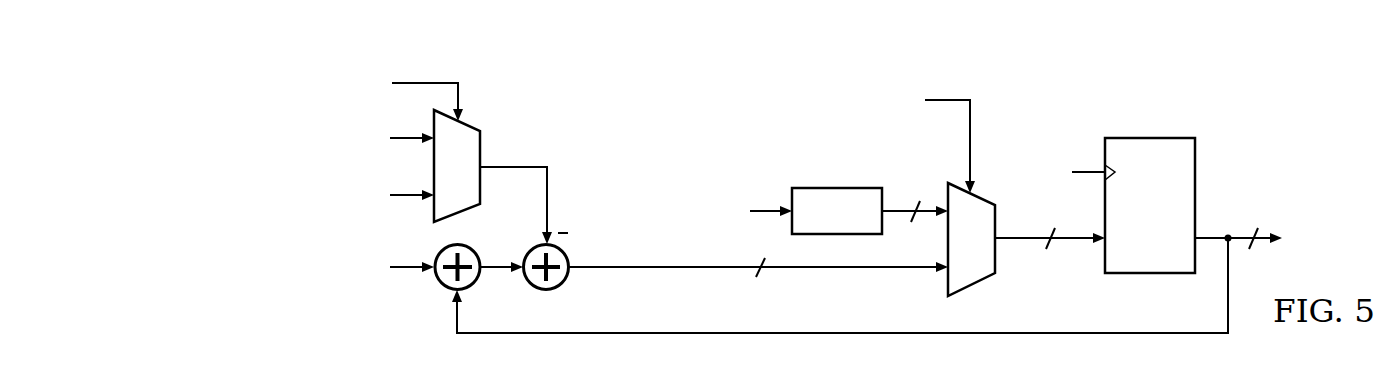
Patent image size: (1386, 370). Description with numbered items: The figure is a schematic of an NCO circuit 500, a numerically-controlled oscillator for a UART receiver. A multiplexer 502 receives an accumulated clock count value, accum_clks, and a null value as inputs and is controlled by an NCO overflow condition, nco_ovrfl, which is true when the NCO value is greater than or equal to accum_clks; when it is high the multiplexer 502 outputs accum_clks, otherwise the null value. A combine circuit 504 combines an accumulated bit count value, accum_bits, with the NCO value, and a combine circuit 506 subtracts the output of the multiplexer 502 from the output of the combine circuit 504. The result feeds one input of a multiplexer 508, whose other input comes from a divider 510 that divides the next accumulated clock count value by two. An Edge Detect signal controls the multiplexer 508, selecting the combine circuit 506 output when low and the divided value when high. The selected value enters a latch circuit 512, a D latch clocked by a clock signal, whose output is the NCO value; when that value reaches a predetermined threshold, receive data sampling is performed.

The NCO circuit 500 is at (1268, 72).
The multiplexer 502 is at (481, 150).
The combine circuit 504 is at (443, 287).
The combine circuit 506 is at (560, 285).
The multiplexer 508 is at (996, 252).
The divider 510 is at (837, 188).
The latch circuit 512 is at (1150, 138).